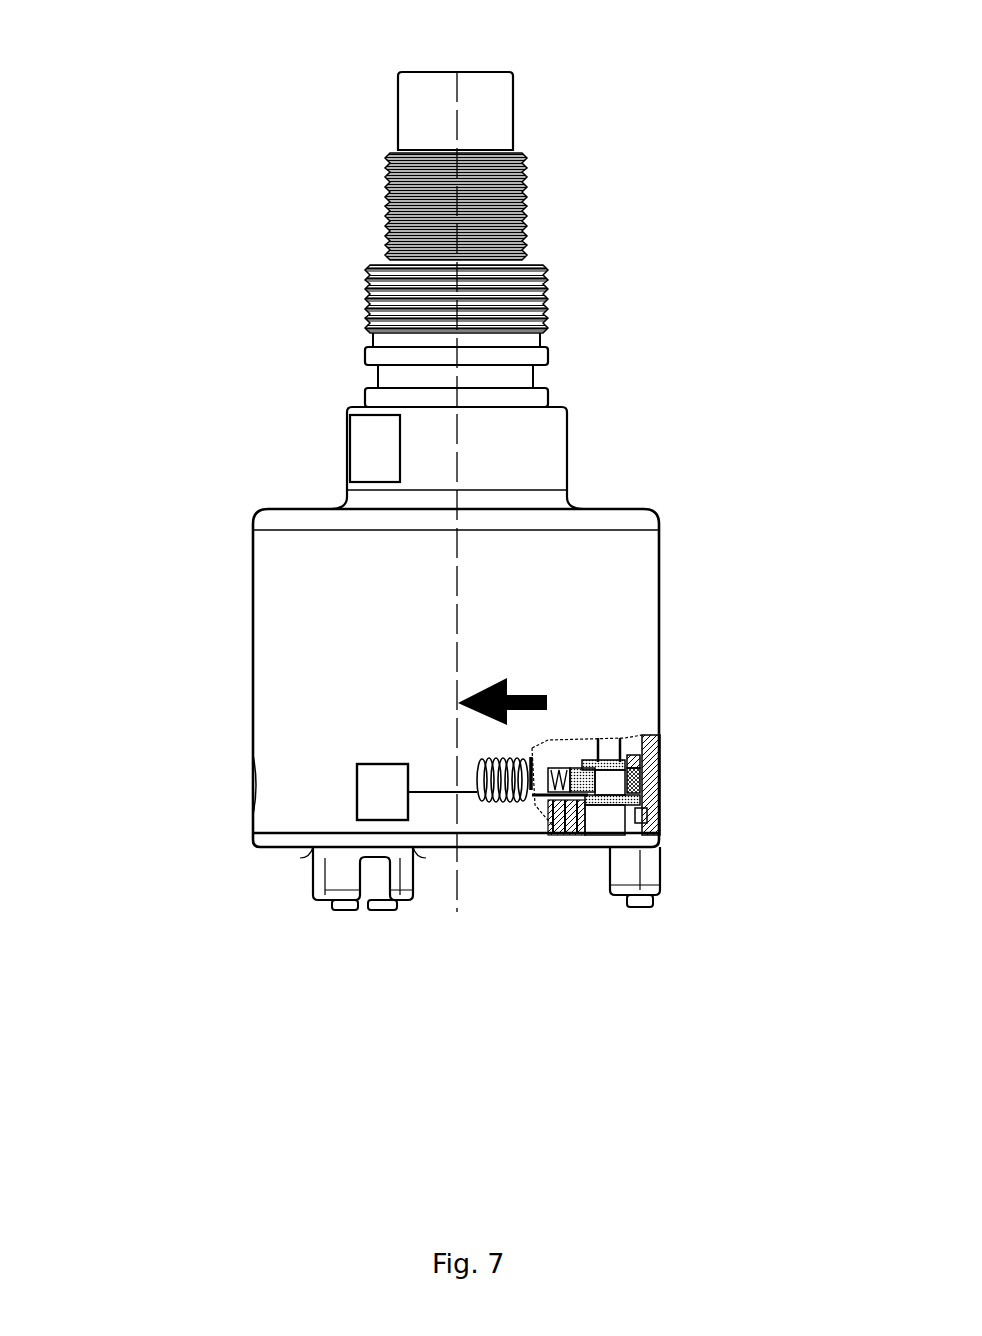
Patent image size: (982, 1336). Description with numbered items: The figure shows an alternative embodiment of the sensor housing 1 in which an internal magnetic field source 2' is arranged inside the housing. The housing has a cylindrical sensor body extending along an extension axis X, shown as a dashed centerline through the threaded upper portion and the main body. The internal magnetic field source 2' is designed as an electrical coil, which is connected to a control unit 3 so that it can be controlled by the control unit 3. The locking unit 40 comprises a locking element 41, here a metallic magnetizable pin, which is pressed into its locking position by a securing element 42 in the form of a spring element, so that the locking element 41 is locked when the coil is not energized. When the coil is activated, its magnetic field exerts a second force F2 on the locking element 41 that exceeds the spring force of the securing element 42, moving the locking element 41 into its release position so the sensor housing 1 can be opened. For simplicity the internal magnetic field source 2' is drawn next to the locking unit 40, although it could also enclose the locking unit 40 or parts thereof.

The sensor housing 1 is at (158, 239).
The extension axis X is at (457, 72).
The second force F2 is at (541, 693).
The internal magnetic field source 2' is at (345, 742).
The control unit 3 is at (353, 784).
The locking unit 40 is at (565, 862).
The locking element 41 is at (582, 782).
The securing element 42 is at (558, 796).